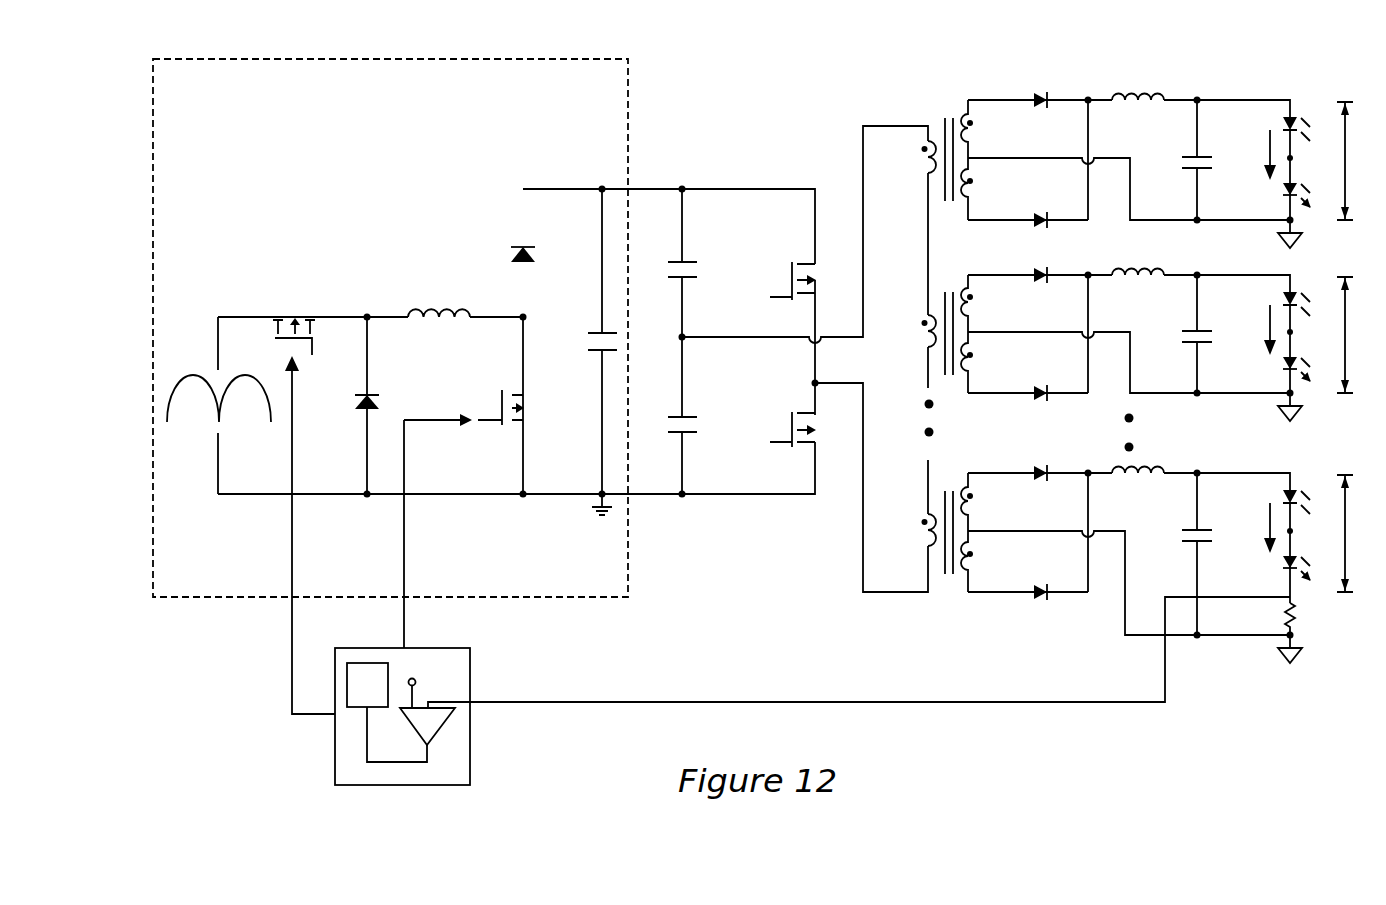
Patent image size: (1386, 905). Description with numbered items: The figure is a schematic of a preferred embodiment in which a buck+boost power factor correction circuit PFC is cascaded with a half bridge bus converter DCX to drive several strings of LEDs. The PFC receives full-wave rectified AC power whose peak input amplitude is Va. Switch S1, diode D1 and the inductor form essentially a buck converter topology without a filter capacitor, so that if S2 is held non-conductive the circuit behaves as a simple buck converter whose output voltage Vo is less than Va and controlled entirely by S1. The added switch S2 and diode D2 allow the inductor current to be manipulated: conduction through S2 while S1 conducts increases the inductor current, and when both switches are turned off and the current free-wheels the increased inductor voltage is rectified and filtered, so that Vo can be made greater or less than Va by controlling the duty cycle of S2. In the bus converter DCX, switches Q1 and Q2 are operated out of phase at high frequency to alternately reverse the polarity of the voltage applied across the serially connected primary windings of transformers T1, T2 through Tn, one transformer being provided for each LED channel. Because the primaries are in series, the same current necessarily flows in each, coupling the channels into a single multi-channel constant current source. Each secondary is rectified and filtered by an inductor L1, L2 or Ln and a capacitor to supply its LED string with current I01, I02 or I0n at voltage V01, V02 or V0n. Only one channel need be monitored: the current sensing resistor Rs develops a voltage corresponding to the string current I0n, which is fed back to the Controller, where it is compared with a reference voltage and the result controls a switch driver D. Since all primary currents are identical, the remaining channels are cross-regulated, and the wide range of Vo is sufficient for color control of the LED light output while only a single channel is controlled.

The buck+boost PFC circuit PFC is at (390, 311).
The input voltage Va is at (219, 405).
The buck switch S1 is at (294, 323).
The buck diode D1 is at (310, 535).
The boost switch S2 is at (495, 405).
The boost diode D2 is at (438, 531).
The output voltage Vo is at (587, 352).
The bus converter circuit DCX is at (798, 359).
The half bridge switch Q1 is at (788, 337).
The half bridge switch Q2 is at (788, 427).
The first transformer T1 is at (948, 156).
The second transformer T2 is at (948, 329).
The nth transformer Tn is at (948, 530).
The first output inductor L1 is at (1138, 111).
The second output inductor L2 is at (1138, 286).
The nth output inductor Ln is at (1138, 483).
The current sensing resistor Rs is at (1304, 619).
The first LED string current I01 is at (1256, 155).
The second LED string current I02 is at (1256, 330).
The nth LED string current I0n is at (1256, 528).
The first output voltage V01 is at (1338, 161).
The second output voltage V02 is at (1339, 335).
The nth output voltage V0n is at (1338, 533).
The control circuit Controller is at (402, 716).